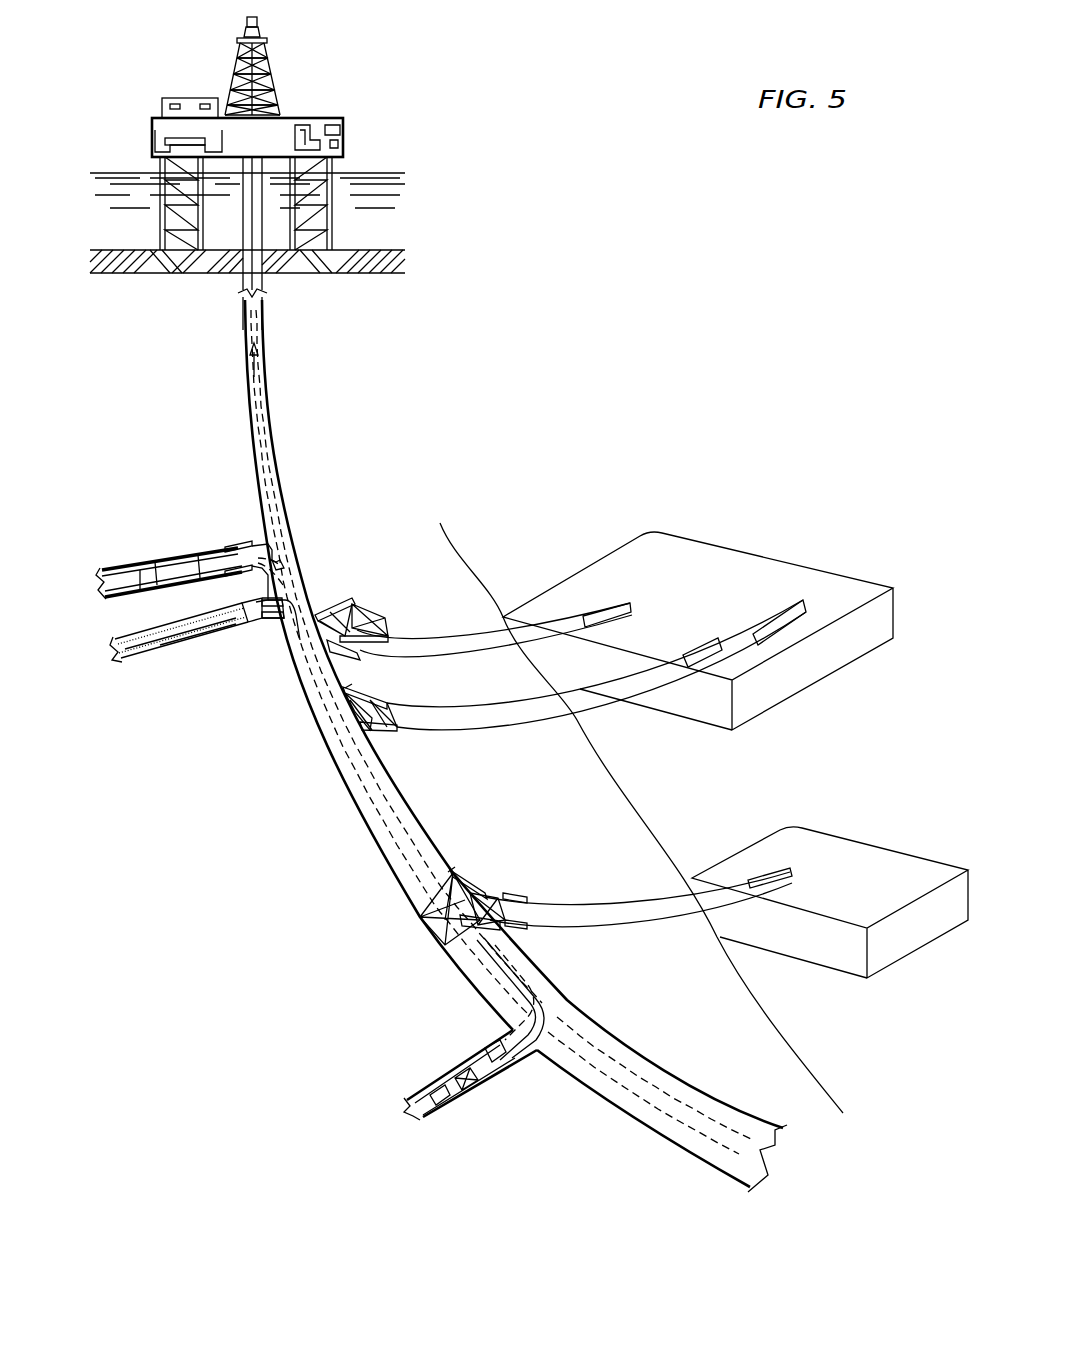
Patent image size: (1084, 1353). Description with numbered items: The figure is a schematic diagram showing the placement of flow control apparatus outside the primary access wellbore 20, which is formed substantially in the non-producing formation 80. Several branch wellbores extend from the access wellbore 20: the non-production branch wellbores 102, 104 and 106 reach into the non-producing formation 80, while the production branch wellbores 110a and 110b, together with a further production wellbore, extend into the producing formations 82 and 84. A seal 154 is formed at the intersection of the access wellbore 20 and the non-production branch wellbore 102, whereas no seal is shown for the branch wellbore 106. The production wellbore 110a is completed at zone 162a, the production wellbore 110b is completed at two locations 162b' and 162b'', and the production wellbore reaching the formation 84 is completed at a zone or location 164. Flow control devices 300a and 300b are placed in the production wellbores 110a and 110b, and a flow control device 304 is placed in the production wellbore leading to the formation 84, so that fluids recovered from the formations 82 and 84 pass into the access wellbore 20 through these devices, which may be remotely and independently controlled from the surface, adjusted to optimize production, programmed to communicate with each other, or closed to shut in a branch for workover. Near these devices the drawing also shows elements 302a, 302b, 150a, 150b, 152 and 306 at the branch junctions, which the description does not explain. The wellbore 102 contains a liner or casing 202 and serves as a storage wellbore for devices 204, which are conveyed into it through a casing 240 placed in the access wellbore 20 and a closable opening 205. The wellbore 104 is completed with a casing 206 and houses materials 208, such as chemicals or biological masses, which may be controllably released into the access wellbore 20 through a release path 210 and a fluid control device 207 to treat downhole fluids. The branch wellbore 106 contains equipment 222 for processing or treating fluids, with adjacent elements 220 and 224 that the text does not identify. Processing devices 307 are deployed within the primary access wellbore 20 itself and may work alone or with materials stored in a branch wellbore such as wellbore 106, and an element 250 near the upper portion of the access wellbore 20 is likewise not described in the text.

The access wellbore 20 is at (363, 805).
The non-producing formation 80 is at (407, 520).
The producing formation 82 is at (718, 591).
The producing formation 84 is at (870, 890).
The non-production branch wellbore 102 is at (118, 570).
The non-production branch wellbore 104 is at (133, 660).
The non-production branch wellbore 106 is at (437, 1110).
The production branch wellbore 110a is at (462, 636).
The production branch wellbore 110b is at (480, 720).
The first junction connector 150a is at (348, 654).
The second junction connector 150b is at (388, 703).
The third junction connector 152 is at (470, 885).
The seal 154 is at (238, 548).
The completion zone 162a is at (600, 600).
The completion location 162b' is at (774, 684).
The completion location 162b'' is at (788, 573).
The completion zone 164 is at (765, 872).
The liner or casing 202 is at (140, 598).
The stored devices 204 is at (180, 560).
The closable opening 205 is at (282, 548).
The casing 206 is at (190, 660).
The fluid control device 207 is at (287, 597).
The stored materials 208 is at (172, 632).
The release path 210 is at (228, 635).
The lower lateral conduit 220 is at (500, 1050).
The processing equipment 222 is at (478, 1085).
The lower lateral packer 224 is at (503, 1060).
The casing 240 is at (387, 840).
The production flow 250 is at (257, 367).
The flow control device 300a is at (340, 636).
The flow control device 300b is at (383, 730).
The first conduit anchor 302a is at (328, 630).
The second conduit anchor 302b is at (350, 708).
The flow control device 304 is at (508, 893).
The third conduit seal 306 is at (483, 907).
The processing devices 307 is at (437, 925).